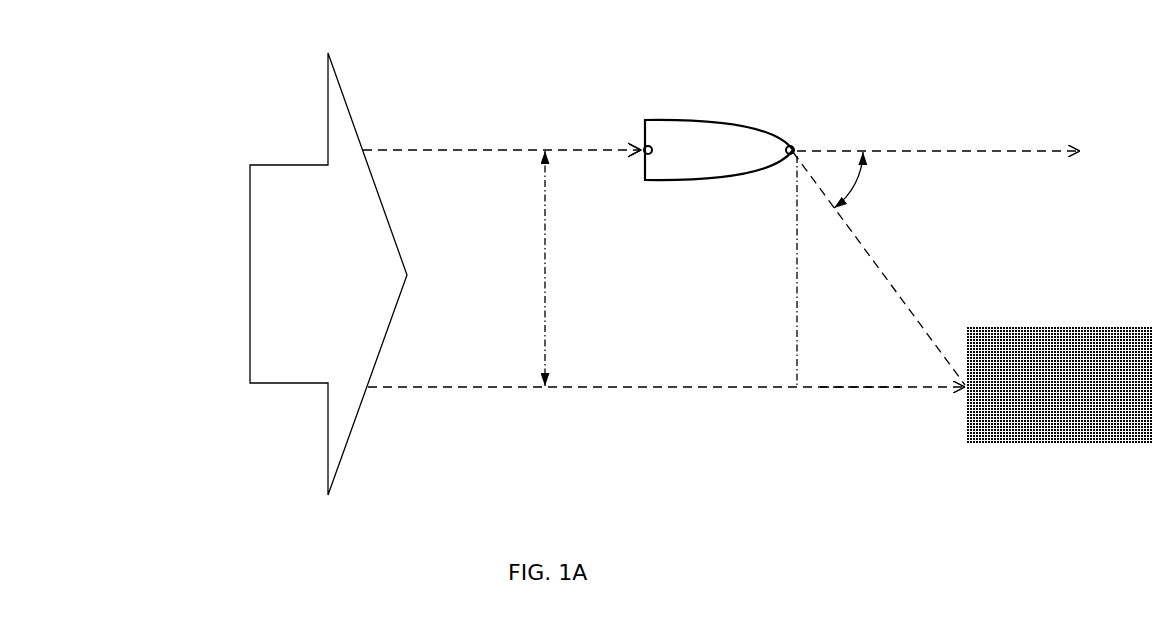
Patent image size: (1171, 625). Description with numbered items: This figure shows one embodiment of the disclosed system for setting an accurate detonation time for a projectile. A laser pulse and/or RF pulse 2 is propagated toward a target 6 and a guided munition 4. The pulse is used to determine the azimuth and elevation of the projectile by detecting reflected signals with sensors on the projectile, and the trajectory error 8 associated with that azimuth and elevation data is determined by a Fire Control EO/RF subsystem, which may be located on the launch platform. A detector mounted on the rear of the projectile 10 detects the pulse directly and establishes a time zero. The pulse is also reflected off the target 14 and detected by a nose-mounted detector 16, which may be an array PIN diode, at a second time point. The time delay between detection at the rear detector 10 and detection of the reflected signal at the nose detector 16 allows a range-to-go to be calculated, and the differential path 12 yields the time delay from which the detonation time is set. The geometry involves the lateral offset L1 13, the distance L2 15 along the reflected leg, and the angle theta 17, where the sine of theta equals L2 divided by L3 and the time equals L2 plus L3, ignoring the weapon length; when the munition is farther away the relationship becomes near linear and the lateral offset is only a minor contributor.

The laser pulse and/or RF pulse 2 is at (277, 280).
The guided munition 4 is at (717, 119).
The target 6 is at (1060, 446).
The trajectory error 8 is at (539, 315).
The detector mounted on the rear of the projectile 10 is at (640, 138).
The differential path 12 is at (764, 393).
The lateral offset L1 13 is at (804, 311).
The reflection off the target 14 is at (913, 300).
The distance L2 15 is at (868, 393).
The nose-mounted detector 16 is at (806, 144).
The angle theta 17 is at (870, 186).